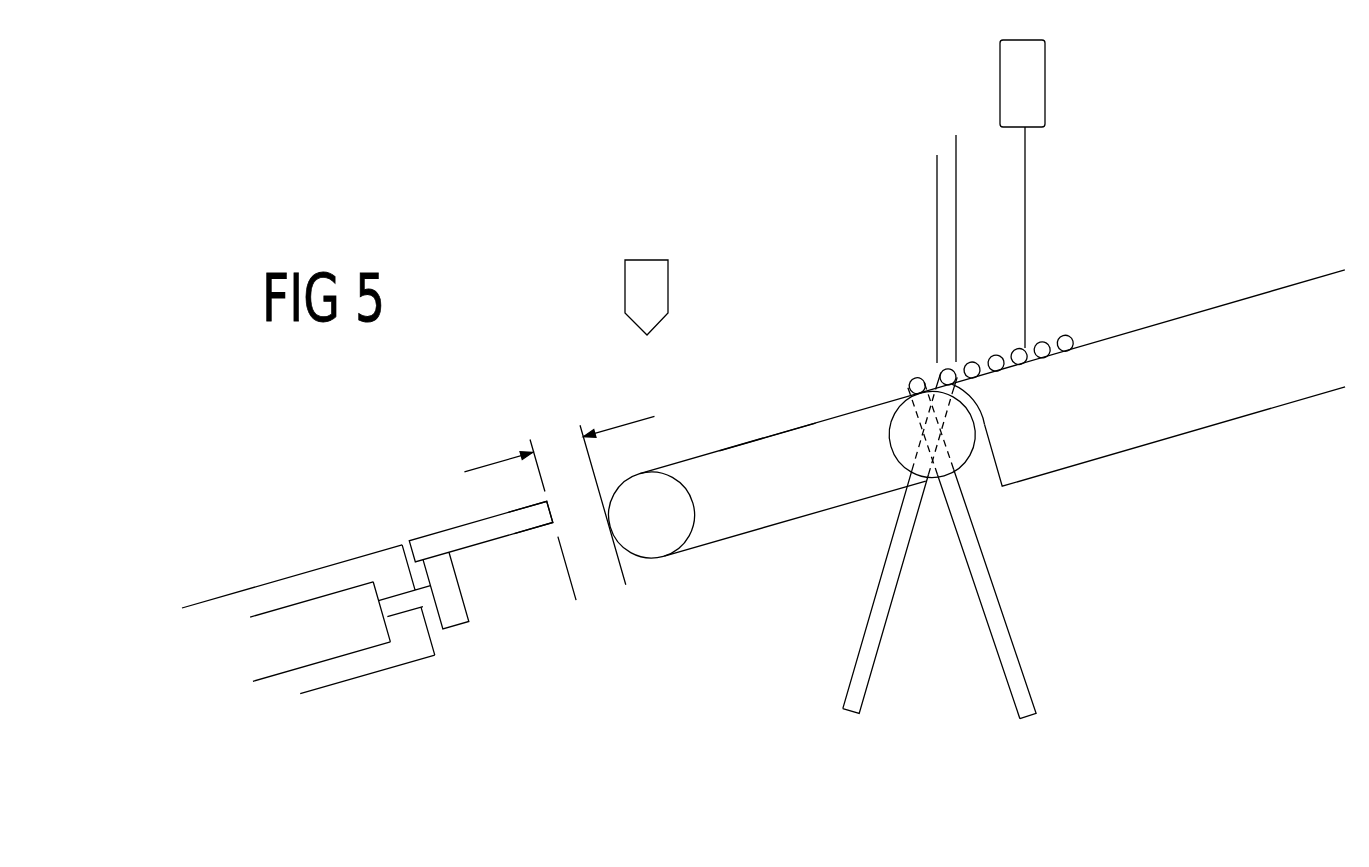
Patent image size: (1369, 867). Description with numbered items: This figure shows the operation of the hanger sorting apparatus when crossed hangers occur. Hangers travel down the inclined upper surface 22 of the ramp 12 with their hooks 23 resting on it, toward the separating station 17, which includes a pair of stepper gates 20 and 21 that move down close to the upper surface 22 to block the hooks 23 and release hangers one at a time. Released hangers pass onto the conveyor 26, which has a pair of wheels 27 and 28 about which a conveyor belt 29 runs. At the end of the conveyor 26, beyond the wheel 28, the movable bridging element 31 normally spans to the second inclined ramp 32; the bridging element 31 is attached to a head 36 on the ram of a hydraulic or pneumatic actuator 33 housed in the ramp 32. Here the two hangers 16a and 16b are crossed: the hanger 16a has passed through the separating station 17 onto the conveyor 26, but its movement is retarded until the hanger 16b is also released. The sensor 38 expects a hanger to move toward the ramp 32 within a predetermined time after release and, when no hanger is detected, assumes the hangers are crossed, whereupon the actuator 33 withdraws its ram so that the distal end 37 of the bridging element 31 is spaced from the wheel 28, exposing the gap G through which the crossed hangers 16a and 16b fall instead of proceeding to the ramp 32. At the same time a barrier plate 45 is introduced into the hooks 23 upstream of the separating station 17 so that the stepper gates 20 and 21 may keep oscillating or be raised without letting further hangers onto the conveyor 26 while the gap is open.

The ramp 12 is at (1205, 401).
The hanger 16a is at (870, 650).
The hanger 16b is at (1003, 632).
The separating station 17 is at (865, 243).
The stepper gate 20 is at (957, 212).
The stepper gate 21 is at (936, 172).
The upper surface 22 is at (1212, 305).
The hooks 23 is at (1063, 337).
The conveyor 26 is at (740, 493).
The wheel 27 is at (963, 425).
The wheel 28 is at (660, 527).
The conveyor belt 29 is at (768, 432).
The bridging element 31 is at (458, 537).
The ramp 32 is at (288, 577).
The actuator 33 is at (352, 630).
The head 36 is at (447, 613).
The distal end 37 is at (515, 523).
The sensor 38 is at (647, 293).
The barrier plate 45 is at (1027, 185).